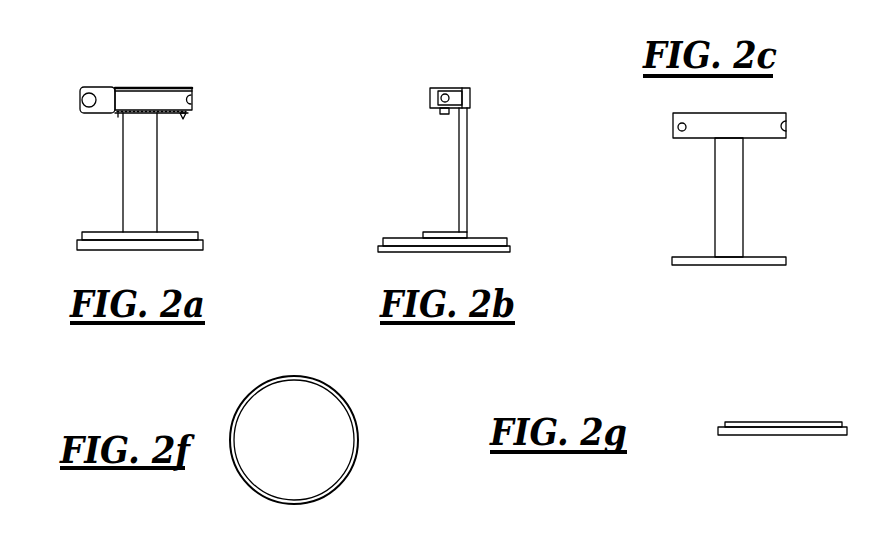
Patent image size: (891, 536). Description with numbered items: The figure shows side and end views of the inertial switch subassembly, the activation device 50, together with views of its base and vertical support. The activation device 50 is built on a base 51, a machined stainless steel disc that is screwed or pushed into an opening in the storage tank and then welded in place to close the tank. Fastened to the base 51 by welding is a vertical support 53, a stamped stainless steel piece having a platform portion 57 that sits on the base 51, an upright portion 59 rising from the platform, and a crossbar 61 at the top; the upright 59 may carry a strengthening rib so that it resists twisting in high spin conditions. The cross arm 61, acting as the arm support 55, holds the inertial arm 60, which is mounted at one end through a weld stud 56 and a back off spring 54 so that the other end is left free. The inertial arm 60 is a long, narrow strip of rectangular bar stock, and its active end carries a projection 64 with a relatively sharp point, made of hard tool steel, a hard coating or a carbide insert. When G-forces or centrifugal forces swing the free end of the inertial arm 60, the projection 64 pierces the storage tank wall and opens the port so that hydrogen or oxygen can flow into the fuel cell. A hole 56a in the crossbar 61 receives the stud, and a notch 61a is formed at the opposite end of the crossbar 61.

In FIG. 2a, the activation device 50 is at (157, 140).
In FIG. 2b, the activation device 50 is at (447, 146).
In FIG. 2a, the base 51 is at (183, 240).
In FIG. 2b, the base 51 is at (503, 242).
In FIG. 2f, the base 51 is at (358, 432).
In FIG. 2g, the base 51 is at (725, 424).
In FIG. 2a, the vertical support 53 is at (150, 154).
In FIG. 2b, the vertical support 53 is at (468, 168).
In FIG. 2c, the vertical support 53 is at (715, 185).
In FIG. 2a, the back off spring 54 is at (121, 114).
In FIG. 2a, the arm support 55 is at (177, 90).
In FIG. 2b, the arm support 55 is at (466, 90).
In FIG. 2a, the weld stud 56 is at (88, 93).
In FIG. 2c, the hole 56a is at (678, 127).
In FIG. 2c, the platform portion 57 is at (770, 257).
In FIG. 2c, the upright portion 59 is at (725, 197).
In FIG. 2a, the inertial arm 60 is at (143, 98).
In FIG. 2b, the inertial arm 60 is at (440, 92).
In FIG. 2c, the crossbar 61 is at (778, 113).
In FIG. 2a, the notch 61a is at (195, 98).
In FIG. 2c, the notch 61a is at (787, 126).
In FIG. 2a, the projection 64 is at (185, 114).
In FIG. 2b, the projection 64 is at (445, 115).